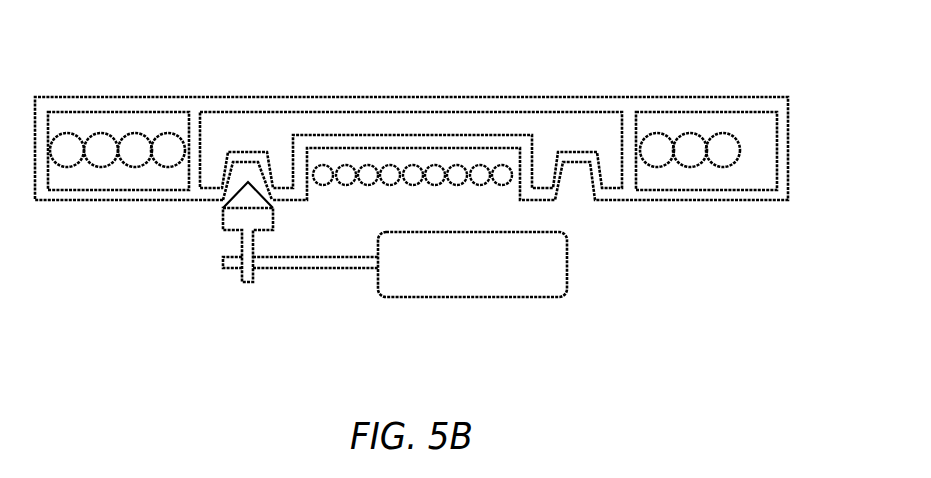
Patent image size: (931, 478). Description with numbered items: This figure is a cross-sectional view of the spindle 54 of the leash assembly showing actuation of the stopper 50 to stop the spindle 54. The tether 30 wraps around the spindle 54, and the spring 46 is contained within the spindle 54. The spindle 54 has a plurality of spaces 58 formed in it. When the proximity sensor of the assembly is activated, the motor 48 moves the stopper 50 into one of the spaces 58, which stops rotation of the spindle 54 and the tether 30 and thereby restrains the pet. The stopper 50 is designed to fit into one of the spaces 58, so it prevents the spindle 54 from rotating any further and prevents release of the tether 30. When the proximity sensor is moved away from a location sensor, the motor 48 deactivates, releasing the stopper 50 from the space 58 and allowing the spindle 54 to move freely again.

The tether 30 is at (131, 135).
The spring 46 is at (478, 172).
The motor 48 is at (492, 270).
The stopper 50 is at (233, 215).
The spindle 54 is at (555, 98).
The spaces 58 is at (248, 172).